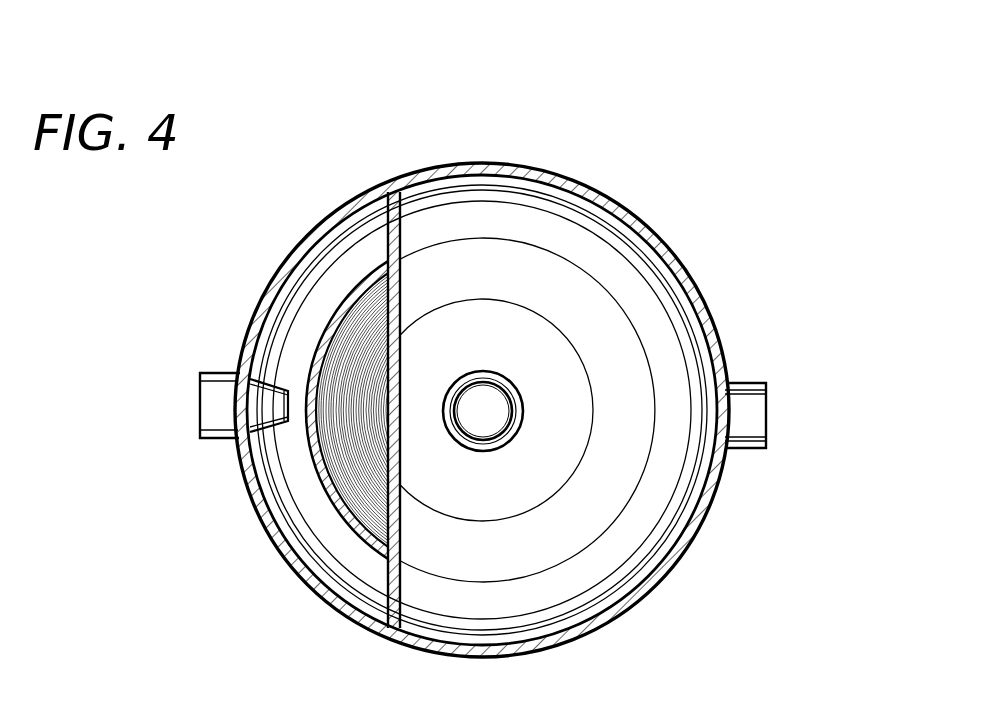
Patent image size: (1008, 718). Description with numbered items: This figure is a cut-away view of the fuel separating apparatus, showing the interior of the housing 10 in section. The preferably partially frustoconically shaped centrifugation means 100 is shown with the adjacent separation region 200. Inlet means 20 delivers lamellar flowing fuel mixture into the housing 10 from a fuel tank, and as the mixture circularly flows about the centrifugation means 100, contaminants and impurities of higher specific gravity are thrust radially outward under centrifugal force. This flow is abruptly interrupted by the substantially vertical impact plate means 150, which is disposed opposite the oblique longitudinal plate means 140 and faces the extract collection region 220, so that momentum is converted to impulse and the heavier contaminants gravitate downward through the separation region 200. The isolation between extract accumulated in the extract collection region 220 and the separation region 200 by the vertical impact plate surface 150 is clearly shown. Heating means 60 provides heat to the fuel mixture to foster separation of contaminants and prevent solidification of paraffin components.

The housing means 10 is at (668, 578).
The inlet means 20 is at (199, 399).
The heating means 60 is at (767, 412).
The centrifugation means 100 is at (360, 333).
The oblique longitudinal plate means 140 is at (310, 458).
The impact plate means 150 is at (403, 242).
The separation region 200 is at (319, 524).
The extract collection region 220 is at (617, 277).